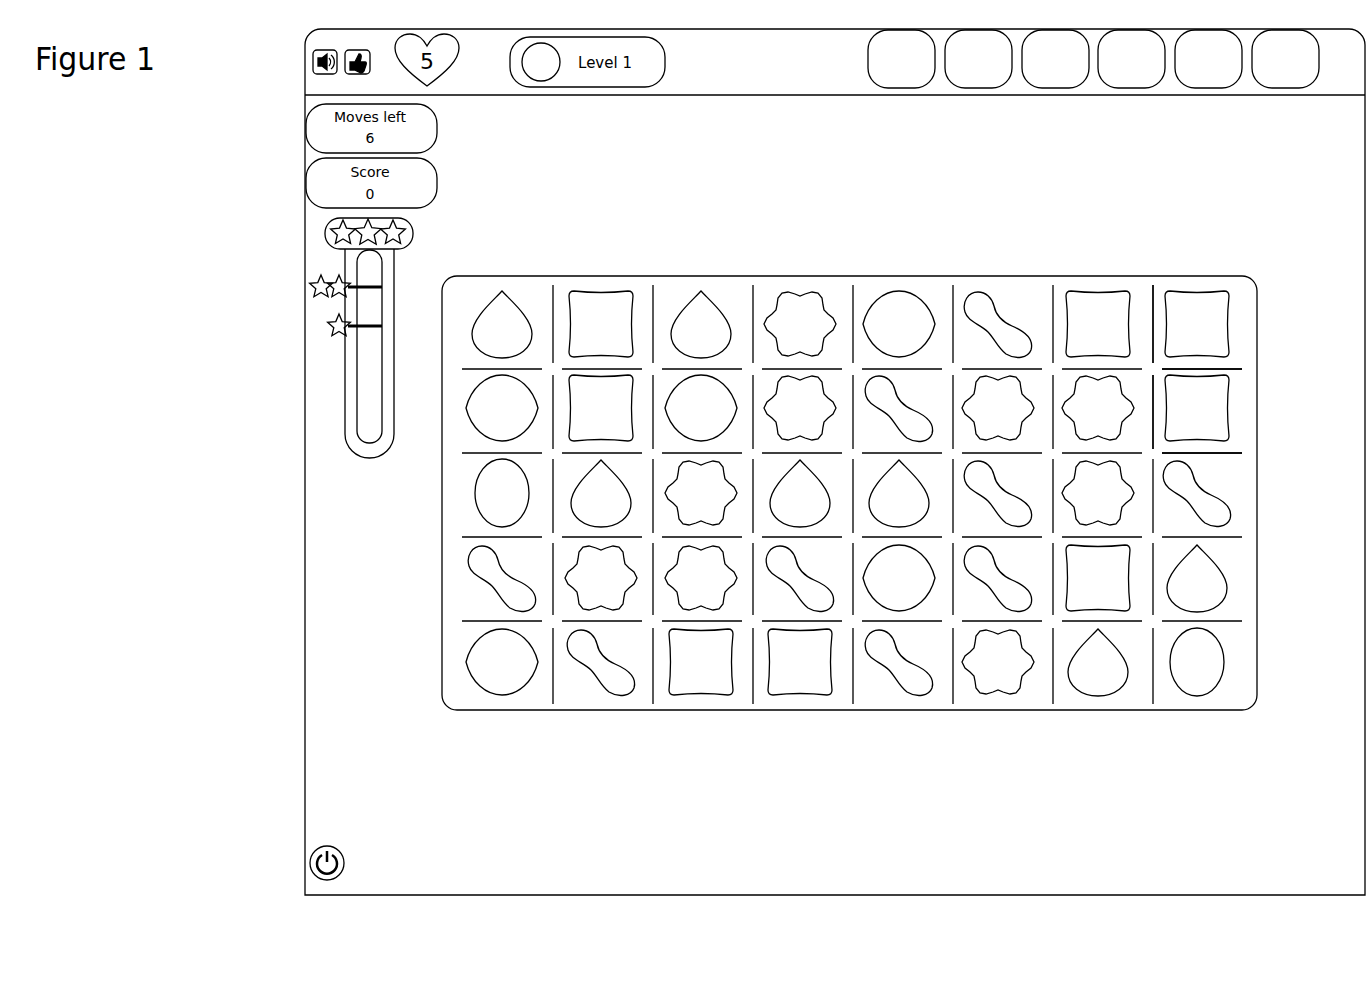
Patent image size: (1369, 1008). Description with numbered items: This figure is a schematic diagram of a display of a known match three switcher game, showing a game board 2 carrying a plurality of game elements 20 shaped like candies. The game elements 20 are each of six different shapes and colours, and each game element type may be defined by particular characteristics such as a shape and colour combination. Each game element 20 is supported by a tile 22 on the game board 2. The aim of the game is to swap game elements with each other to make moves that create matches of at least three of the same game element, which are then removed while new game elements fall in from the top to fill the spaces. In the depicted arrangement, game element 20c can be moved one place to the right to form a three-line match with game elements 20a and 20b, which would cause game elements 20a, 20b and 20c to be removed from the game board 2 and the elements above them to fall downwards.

The game board 2 is at (1113, 707).
The game element 20 is at (1270, 440).
The game element 20a is at (1018, 515).
The game element 20b is at (1032, 585).
The game element 20c is at (910, 690).
The tile 22 is at (1270, 404).